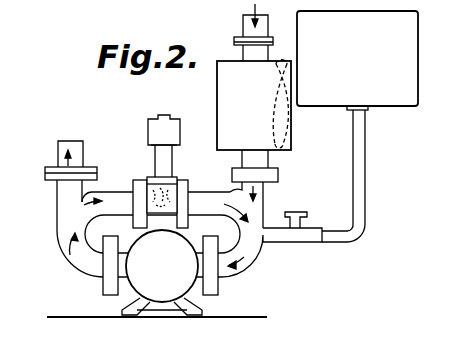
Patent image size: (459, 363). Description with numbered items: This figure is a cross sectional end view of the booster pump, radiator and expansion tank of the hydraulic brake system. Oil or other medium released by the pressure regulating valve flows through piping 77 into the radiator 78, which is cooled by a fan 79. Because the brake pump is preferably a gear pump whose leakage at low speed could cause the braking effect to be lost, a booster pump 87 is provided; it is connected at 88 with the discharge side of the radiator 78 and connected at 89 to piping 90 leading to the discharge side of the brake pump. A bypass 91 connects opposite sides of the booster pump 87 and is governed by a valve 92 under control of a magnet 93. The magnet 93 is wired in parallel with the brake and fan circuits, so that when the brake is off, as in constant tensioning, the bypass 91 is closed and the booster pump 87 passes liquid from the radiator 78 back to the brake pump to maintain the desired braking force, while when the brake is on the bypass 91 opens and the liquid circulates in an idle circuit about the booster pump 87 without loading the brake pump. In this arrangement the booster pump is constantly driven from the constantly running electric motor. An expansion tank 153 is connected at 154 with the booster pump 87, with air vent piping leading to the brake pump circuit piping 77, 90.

The piping 77 is at (243, 31).
The radiator 78 is at (254, 105).
The fan 79 is at (291, 133).
The booster pump 87 is at (162, 272).
The connection to radiator discharge 88 is at (265, 192).
The connection to brake pump piping 89 is at (58, 204).
The piping 90 is at (82, 148).
The bypass 91 is at (118, 193).
The valve 92 is at (178, 198).
The magnet 93 is at (150, 128).
The expansion tank 153 is at (357, 58).
The connection of expansion tank 154 is at (366, 213).